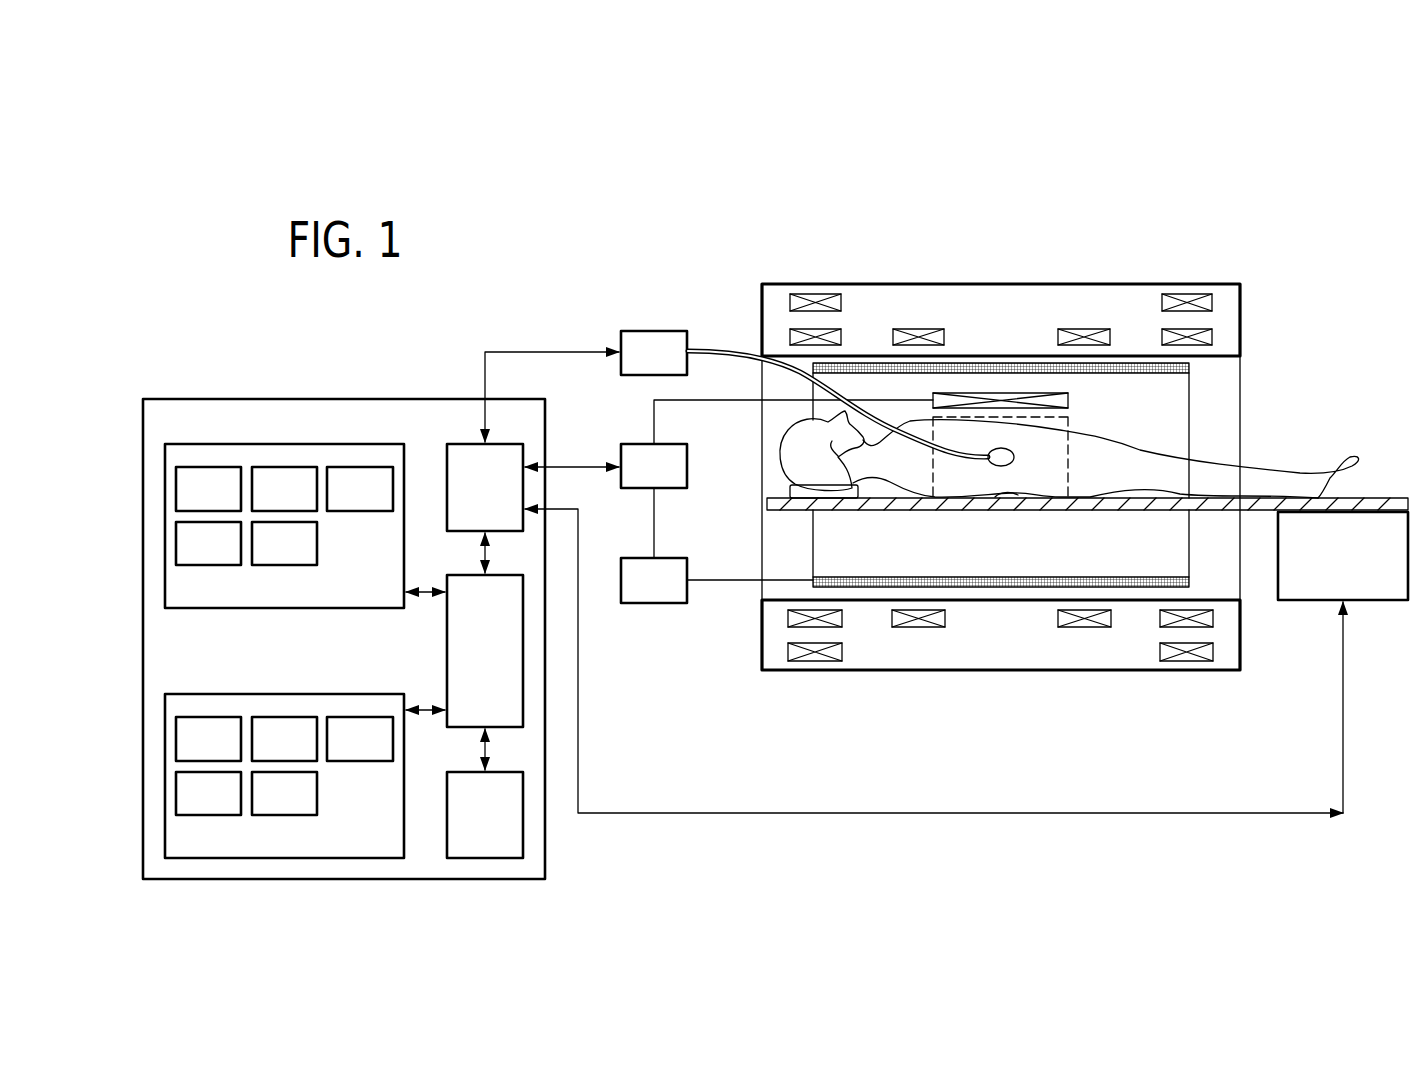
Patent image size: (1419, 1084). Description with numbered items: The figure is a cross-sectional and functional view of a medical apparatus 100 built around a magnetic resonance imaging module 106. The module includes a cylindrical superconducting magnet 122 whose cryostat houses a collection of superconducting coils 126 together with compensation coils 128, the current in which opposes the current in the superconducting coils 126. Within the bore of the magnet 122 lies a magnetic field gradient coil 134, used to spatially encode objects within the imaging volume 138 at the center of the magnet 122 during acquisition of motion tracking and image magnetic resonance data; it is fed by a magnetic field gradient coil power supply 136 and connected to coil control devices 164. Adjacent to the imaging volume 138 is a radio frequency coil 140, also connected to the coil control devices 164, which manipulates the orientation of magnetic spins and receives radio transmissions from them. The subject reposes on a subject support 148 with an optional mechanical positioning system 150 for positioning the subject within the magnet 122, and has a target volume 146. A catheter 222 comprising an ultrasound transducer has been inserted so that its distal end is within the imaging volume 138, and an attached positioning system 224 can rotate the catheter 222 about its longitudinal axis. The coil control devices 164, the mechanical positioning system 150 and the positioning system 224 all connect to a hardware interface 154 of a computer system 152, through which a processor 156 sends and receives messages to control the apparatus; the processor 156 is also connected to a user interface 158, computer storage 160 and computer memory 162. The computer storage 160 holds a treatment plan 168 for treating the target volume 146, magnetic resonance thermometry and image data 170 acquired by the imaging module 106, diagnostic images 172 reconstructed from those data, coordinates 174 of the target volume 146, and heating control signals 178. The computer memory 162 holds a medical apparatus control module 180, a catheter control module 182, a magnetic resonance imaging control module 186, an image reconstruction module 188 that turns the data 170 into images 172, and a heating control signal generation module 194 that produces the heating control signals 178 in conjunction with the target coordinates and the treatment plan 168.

The medical apparatus 100 is at (1237, 229).
The magnetic resonance imaging module 106 is at (1218, 388).
The magnet 122 is at (1243, 287).
The superconducting coils 126 is at (922, 329).
The compensation coils 128 is at (826, 294).
The magnetic field gradient coil 134 is at (1085, 577).
The magnetic field gradient coil power supply 136 is at (634, 595).
The imaging volume 138 is at (1070, 419).
The radio frequency coil 140 is at (963, 393).
The target volume 146 is at (1010, 452).
The subject support 148 is at (798, 509).
The mechanical positioning system 150 is at (1323, 571).
The computer system 152 is at (385, 398).
The hardware interface 154 is at (465, 502).
The processor 156 is at (465, 666).
The user interface 158 is at (465, 830).
The computer storage 160 is at (272, 443).
The computer memory 162 is at (272, 693).
The coil control devices 164 is at (634, 481).
The treatment plan 168 is at (188, 504).
The magnetic resonance thermometry and image data 170 is at (264, 504).
The diagnostic images 172 is at (340, 504).
The coordinates 174 is at (188, 558).
The heating control signals 178 is at (264, 558).
The medical apparatus control module 180 is at (188, 754).
The catheter control module 182 is at (264, 754).
The magnetic resonance imaging control module 186 is at (340, 754).
The image reconstruction module 188 is at (188, 808).
The heating control signal generation module 194 is at (264, 808).
The catheter 222 is at (748, 362).
The positioning system 224 is at (634, 368).